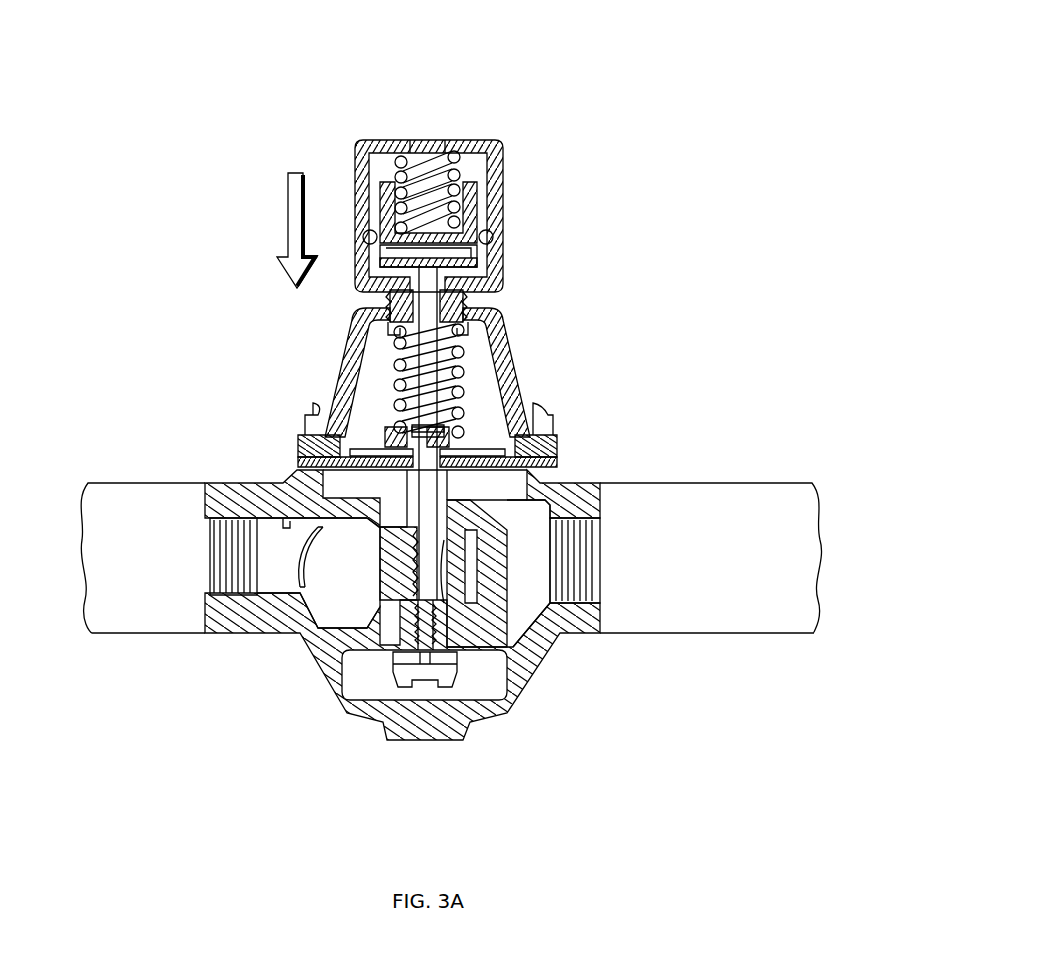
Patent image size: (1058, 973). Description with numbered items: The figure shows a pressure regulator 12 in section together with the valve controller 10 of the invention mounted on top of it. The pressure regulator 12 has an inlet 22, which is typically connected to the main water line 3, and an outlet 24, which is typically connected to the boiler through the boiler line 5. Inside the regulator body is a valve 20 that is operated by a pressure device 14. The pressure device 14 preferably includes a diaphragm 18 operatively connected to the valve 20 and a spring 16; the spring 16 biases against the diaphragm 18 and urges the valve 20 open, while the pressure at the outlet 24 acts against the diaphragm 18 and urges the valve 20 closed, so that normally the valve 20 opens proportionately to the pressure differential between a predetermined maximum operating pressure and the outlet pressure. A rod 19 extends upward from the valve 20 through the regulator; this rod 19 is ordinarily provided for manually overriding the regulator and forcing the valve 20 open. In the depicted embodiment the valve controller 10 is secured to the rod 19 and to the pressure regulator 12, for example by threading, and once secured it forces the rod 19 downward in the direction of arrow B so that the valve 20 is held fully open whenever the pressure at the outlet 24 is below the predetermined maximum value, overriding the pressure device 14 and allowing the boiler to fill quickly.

The valve controller 10 is at (574, 93).
The pressure regulator 12 is at (556, 393).
The pressure device 14 is at (474, 368).
The spring 16 is at (398, 366).
The diaphragm 18 is at (322, 433).
The rod 19 is at (440, 286).
The valve 20 is at (476, 672).
The inlet 22 is at (193, 563).
The outlet 24 is at (618, 563).
The main water line 3 is at (193, 633).
The boiler line 5 is at (642, 633).
The arrow B is at (288, 223).